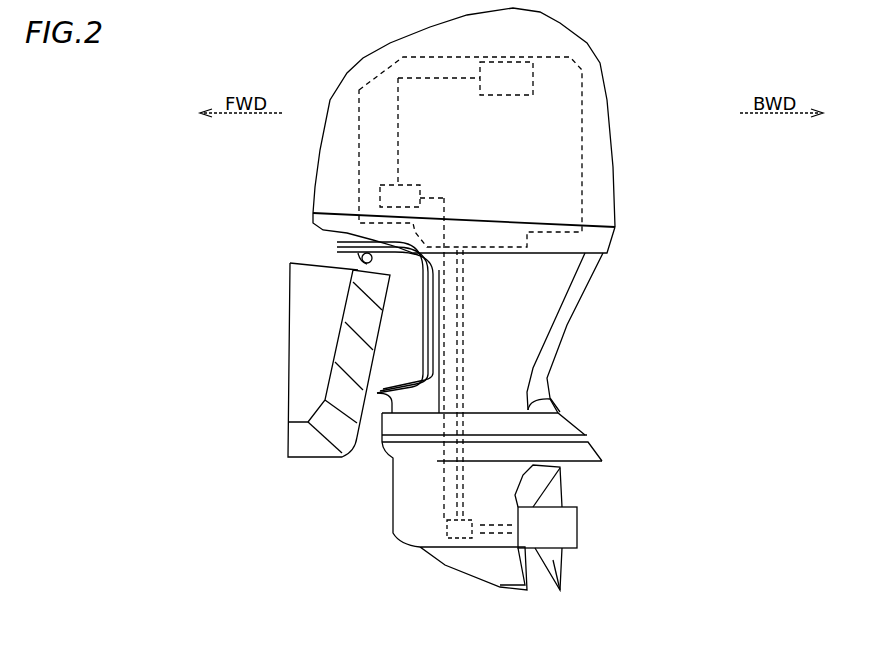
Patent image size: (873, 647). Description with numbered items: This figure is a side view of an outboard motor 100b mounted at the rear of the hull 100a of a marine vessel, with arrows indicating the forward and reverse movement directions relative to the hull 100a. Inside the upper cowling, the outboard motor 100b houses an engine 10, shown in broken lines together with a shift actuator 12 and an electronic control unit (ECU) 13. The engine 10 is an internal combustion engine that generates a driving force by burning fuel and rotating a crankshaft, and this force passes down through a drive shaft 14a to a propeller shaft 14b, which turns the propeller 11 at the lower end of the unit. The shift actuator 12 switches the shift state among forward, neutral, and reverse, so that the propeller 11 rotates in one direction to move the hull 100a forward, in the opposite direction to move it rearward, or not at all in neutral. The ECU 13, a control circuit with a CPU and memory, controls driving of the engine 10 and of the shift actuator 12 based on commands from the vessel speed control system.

The engine 10 is at (587, 168).
The propeller 11 is at (563, 497).
The shift actuator 12 is at (414, 183).
The electronic control unit (ECU) 13 is at (497, 98).
The drive shaft 14a is at (467, 317).
The propeller shaft 14b is at (484, 540).
The hull 100a is at (288, 432).
The outboard motor 100b is at (623, 60).